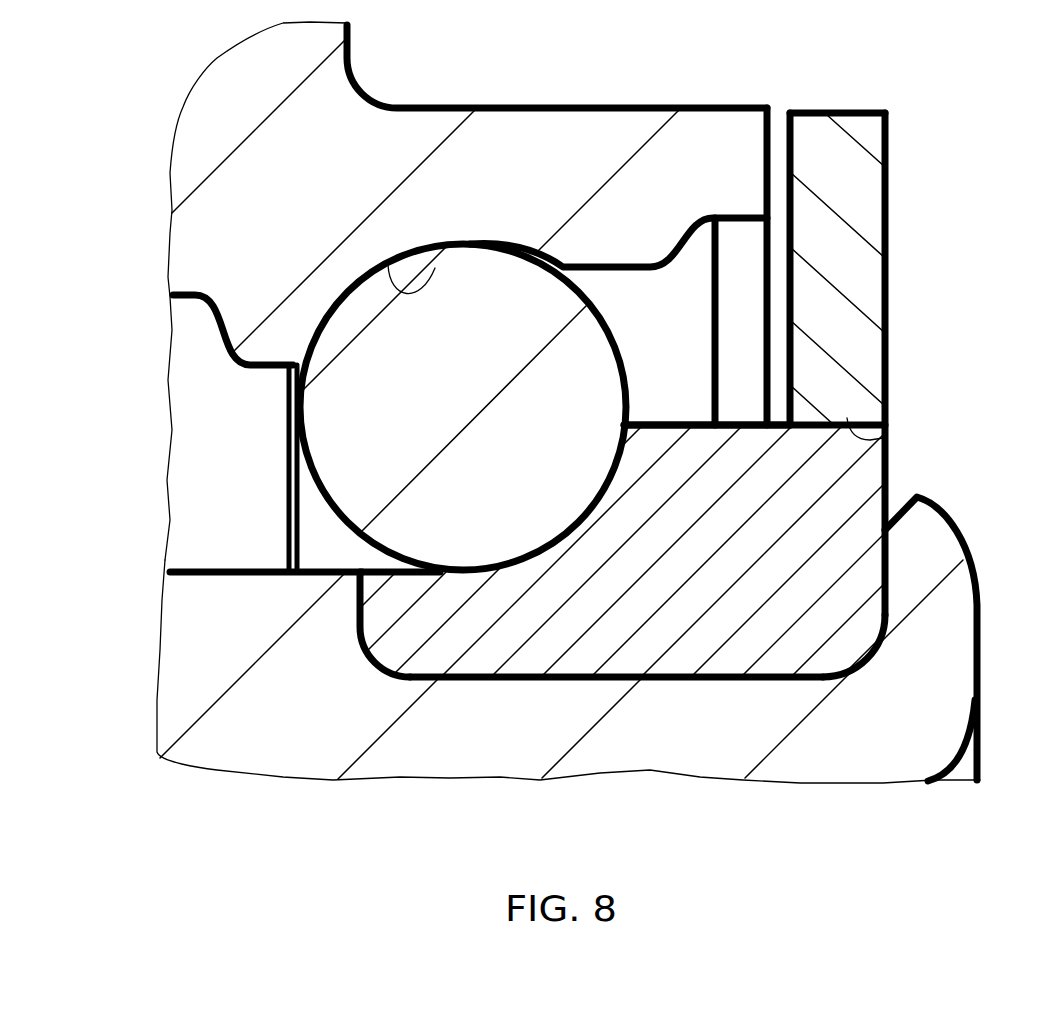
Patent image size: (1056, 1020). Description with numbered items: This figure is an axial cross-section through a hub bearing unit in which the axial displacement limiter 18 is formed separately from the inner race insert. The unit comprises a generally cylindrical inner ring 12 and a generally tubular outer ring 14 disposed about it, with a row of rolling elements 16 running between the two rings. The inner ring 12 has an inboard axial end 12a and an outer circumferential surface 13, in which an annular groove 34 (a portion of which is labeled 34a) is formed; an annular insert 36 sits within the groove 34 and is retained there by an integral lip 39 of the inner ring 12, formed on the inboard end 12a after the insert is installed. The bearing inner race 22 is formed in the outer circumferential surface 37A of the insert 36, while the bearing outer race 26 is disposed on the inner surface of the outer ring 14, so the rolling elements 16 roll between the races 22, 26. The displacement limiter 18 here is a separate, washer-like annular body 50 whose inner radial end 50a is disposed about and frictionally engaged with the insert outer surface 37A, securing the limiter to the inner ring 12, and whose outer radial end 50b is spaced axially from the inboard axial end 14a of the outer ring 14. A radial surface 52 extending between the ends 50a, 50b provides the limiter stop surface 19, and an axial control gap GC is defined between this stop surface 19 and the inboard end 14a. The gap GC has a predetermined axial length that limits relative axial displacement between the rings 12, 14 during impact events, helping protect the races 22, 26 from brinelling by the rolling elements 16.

The inner ring 12 is at (827, 812).
The inboard axial end 12a is at (947, 710).
The outer circumferential surface 13 is at (241, 568).
The outer ring 14 is at (568, 48).
The inboard axial end 14a is at (750, 128).
The rolling elements 16 is at (347, 318).
The displacement limiter 18 is at (927, 247).
The radial stop surface 19 is at (787, 283).
The bearing inner race 22 is at (547, 537).
The bearing outer race 26 is at (397, 295).
The annular groove 34 is at (580, 677).
The ring bottom corner 34a is at (668, 672).
The annular insert 36 is at (890, 467).
The insert outer circumferential surface 37A is at (680, 421).
The integral lip 39 is at (943, 557).
The separate annular body 50 is at (880, 335).
The inner radial end 50a is at (885, 436).
The outer radial end 50b is at (860, 127).
The radial surface 52 is at (790, 183).
The axial control gap GC is at (780, 160).